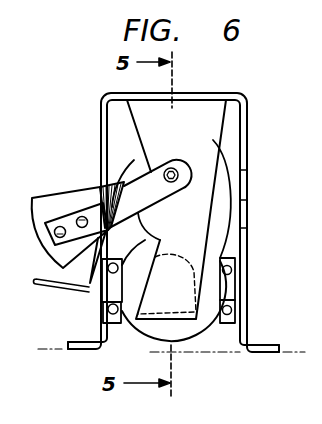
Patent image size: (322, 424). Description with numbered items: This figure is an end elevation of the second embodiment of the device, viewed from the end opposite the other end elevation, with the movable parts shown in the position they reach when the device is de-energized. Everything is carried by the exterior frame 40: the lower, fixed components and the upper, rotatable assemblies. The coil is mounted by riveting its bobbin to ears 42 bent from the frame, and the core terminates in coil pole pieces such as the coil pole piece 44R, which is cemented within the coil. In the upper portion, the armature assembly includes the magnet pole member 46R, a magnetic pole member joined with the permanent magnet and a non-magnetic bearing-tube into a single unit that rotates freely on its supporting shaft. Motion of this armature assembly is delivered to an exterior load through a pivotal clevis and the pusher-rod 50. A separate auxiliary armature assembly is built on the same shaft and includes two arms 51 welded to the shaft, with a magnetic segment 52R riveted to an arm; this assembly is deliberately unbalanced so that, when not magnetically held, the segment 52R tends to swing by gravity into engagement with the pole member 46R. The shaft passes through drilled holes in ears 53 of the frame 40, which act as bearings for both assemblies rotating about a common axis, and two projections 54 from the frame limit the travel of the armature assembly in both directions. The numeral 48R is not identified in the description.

The exterior frame 40 is at (246, 231).
The ears 42 is at (113, 323).
The coil pole piece 44R is at (104, 304).
The magnet pole member 46R is at (205, 246).
The right pawl 48R is at (11, 253).
The pusher-rod 50 is at (39, 287).
The arms 51 is at (152, 201).
The magnetic segment 52R is at (61, 207).
The ears 53 is at (183, 147).
The projections 54 is at (246, 187).